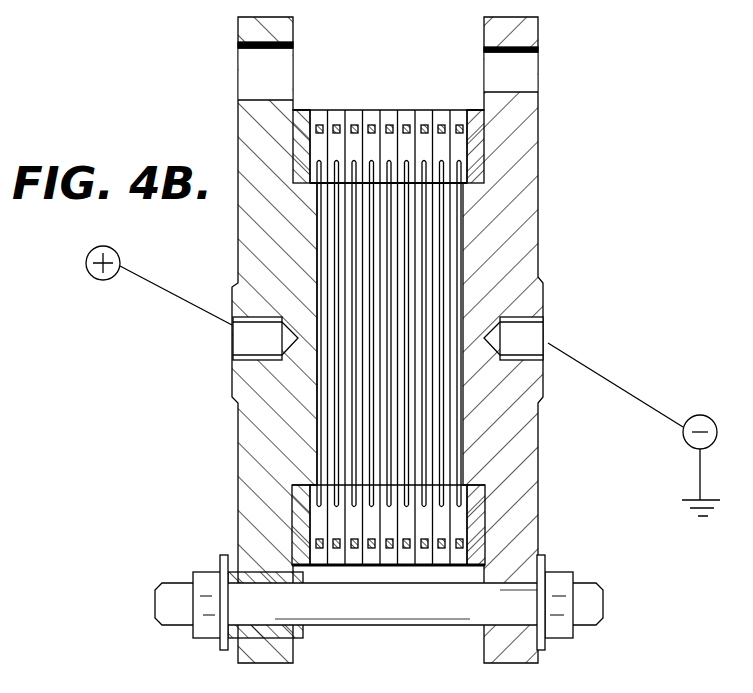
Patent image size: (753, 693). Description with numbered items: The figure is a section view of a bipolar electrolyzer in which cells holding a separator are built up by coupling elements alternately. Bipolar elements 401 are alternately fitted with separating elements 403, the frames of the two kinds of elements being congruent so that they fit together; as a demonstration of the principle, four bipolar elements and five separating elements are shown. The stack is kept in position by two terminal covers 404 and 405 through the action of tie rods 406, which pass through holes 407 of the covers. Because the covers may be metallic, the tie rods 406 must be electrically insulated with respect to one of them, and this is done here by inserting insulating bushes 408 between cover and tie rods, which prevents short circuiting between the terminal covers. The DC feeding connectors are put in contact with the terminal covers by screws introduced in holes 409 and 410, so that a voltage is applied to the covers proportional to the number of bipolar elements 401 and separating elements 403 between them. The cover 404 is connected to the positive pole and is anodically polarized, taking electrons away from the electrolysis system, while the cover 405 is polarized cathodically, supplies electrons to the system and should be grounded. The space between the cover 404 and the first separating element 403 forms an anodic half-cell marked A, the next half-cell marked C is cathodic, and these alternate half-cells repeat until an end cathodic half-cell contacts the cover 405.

The bipolar element 401 is at (440, 110).
The separating element 403 is at (462, 568).
The terminal cover 404 is at (257, 452).
The terminal cover 405 is at (512, 210).
The tie rod 406 is at (460, 610).
The hole 407 is at (253, 63).
The insulating bush 408 is at (237, 557).
The hole 409 is at (248, 340).
The hole 410 is at (530, 338).